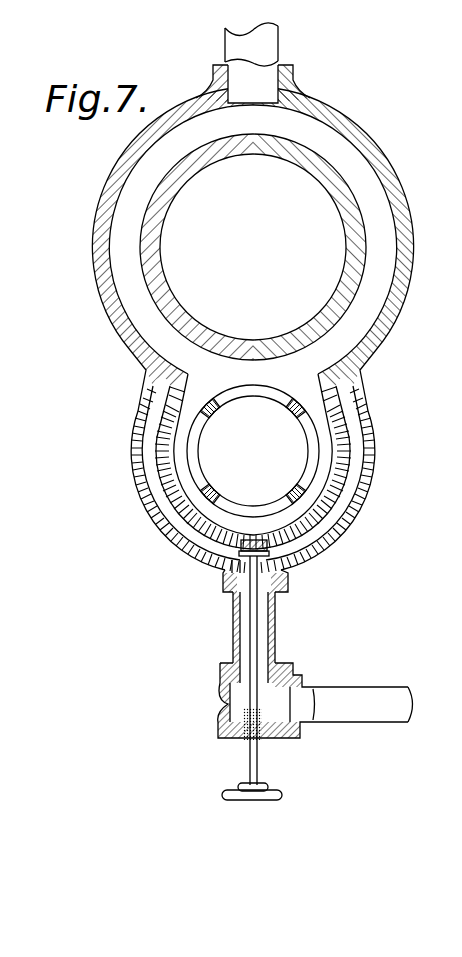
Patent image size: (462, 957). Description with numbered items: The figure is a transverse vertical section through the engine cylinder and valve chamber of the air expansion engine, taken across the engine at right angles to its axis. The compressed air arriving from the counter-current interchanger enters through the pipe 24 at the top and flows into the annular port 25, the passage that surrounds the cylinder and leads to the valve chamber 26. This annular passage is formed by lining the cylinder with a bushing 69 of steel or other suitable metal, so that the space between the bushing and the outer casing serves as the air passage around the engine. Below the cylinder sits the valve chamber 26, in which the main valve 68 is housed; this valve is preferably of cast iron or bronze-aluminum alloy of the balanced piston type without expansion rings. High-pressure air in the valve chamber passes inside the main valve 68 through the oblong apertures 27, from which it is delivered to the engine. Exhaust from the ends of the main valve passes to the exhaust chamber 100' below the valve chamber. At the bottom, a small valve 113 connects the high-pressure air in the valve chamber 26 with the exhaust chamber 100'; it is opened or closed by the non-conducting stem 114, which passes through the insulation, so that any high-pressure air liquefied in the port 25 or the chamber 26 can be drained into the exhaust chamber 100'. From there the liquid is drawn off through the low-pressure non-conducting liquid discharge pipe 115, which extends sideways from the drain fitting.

The pipe 24 is at (245, 48).
The annular port 25 is at (315, 132).
The bushing 69 is at (148, 243).
The oblong apertures 27 is at (252, 398).
The valve chamber 26 is at (205, 511).
The main valve 68 is at (300, 500).
The small valve 113 is at (215, 558).
The exhaust chamber 100' is at (256, 490).
The non-conducting stem 114 is at (252, 621).
The low-pressure non-conducting liquid discharge pipe 115 is at (330, 700).